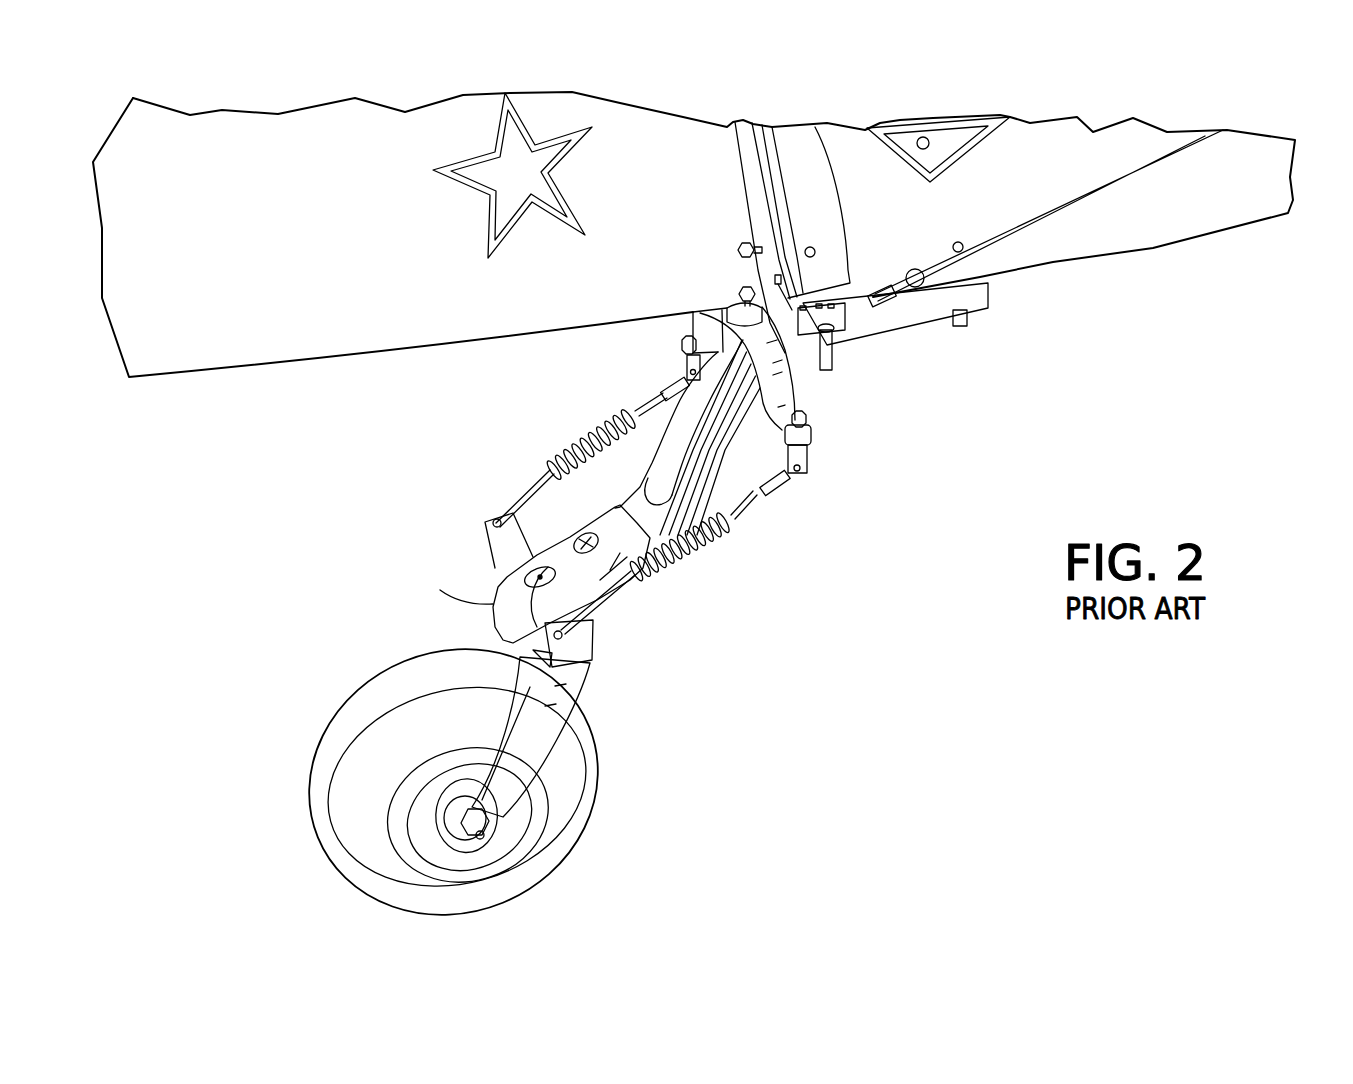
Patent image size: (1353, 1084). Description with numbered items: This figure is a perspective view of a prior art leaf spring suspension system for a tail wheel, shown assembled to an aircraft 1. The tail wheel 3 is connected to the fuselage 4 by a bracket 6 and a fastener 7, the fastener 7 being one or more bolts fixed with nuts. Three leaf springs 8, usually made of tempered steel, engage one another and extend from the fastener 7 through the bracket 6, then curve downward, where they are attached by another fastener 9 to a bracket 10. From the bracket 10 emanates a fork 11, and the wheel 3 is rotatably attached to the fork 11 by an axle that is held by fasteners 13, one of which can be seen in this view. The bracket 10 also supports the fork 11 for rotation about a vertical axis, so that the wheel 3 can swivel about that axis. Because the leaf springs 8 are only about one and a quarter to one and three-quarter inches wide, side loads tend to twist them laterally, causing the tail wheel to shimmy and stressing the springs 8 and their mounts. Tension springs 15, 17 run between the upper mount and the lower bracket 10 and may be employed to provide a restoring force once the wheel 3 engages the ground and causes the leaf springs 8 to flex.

The aircraft 1 is at (307, 370).
The tail wheel 3 is at (580, 793).
The fuselage 4 is at (1158, 246).
The bracket 6 is at (838, 366).
The fastener 7 is at (960, 327).
The leaf springs 8 is at (722, 447).
The fastener 9 is at (582, 527).
The bracket 10 is at (498, 605).
The fork 11 is at (565, 688).
The fasteners 13 is at (487, 835).
The tension spring 15 is at (680, 568).
The tension spring 17 is at (580, 440).